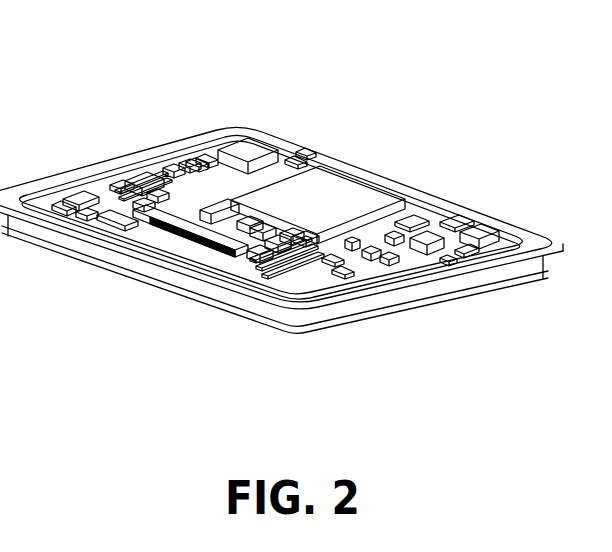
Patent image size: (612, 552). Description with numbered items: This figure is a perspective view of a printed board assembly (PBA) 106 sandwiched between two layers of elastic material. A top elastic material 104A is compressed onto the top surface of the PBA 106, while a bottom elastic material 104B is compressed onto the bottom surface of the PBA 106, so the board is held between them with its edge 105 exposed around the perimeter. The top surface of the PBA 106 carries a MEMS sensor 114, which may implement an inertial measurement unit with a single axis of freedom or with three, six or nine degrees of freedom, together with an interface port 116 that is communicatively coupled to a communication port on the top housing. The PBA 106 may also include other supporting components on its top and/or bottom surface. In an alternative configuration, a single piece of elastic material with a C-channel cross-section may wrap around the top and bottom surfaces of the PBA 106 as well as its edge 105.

The top elastic material 104A is at (240, 132).
The bottom elastic material 104B is at (400, 313).
The edge 105 is at (288, 312).
The printed board assembly (PBA) 106 is at (130, 228).
The MEMS sensor 114 is at (358, 197).
The interface port 116 is at (205, 237).